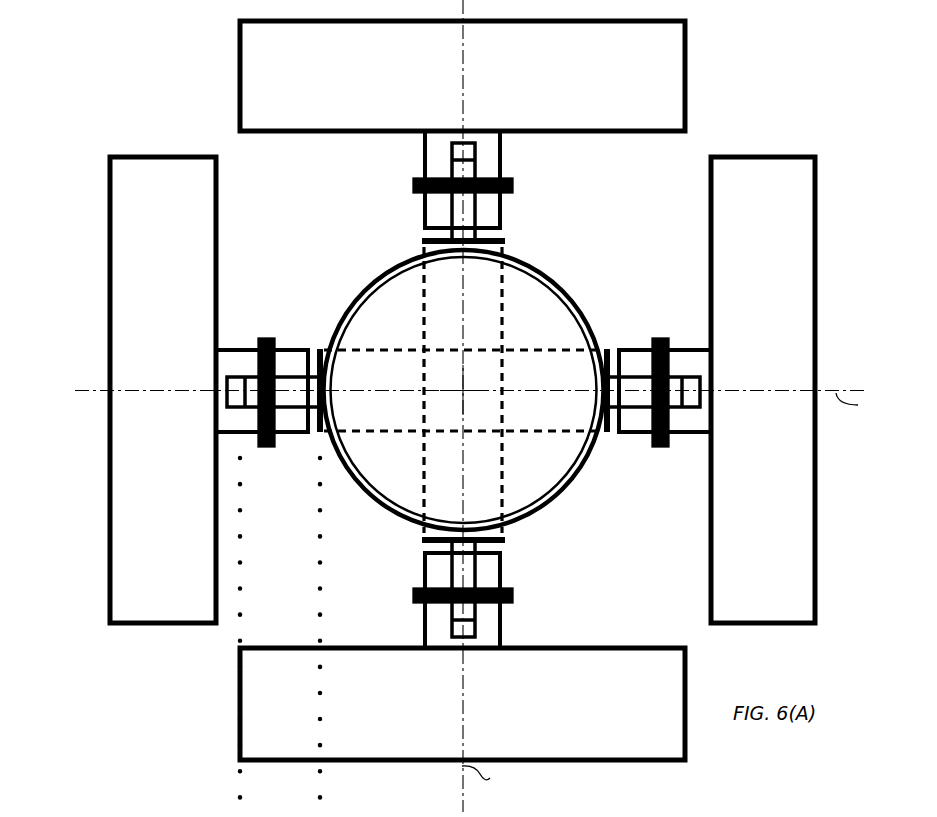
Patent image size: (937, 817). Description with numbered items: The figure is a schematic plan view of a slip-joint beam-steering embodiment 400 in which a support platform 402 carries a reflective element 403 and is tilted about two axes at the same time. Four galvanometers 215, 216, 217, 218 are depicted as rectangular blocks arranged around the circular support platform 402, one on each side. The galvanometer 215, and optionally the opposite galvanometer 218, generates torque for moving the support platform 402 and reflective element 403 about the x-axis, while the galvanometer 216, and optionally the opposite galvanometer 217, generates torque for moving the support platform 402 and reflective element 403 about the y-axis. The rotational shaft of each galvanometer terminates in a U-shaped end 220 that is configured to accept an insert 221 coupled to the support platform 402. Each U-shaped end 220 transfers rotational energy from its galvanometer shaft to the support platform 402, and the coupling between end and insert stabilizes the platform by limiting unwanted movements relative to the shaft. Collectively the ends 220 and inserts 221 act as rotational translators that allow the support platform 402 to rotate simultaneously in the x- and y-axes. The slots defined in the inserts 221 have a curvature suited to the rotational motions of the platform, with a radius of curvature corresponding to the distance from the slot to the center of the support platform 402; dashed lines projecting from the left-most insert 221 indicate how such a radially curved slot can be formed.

The representative embodiment 400 is at (817, 123).
The galvanometer 215 is at (800, 540).
The galvanometer 216 is at (672, 97).
The galvanometer 217 is at (646, 750).
The galvanometer 218 is at (123, 537).
The U-shaped end 220 is at (505, 152).
The insert 221 is at (440, 204).
The support platform 402 is at (530, 258).
The reflective element 403 is at (553, 288).